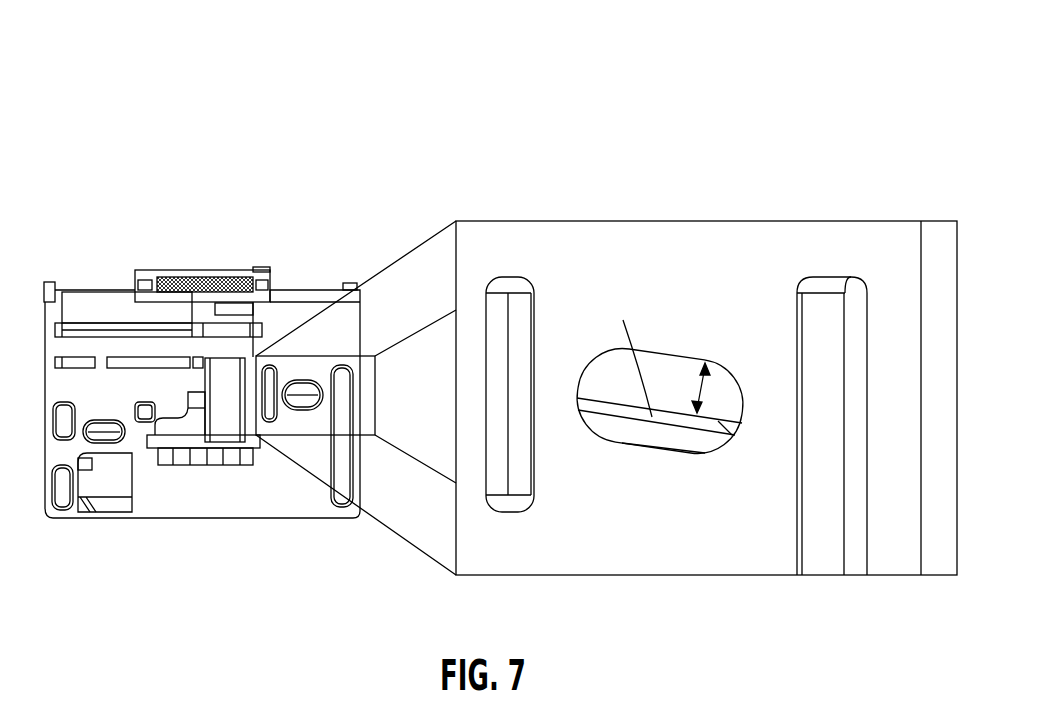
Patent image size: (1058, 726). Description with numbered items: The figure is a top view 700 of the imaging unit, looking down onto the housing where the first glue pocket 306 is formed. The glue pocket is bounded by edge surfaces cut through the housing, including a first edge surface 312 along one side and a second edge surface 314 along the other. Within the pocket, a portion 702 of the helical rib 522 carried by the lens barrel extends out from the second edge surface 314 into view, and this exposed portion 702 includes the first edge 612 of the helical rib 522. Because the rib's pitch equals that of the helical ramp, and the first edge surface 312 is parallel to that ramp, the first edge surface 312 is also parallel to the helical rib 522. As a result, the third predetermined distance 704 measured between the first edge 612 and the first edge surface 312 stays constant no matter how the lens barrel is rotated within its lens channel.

The top view 700 is at (306, 110).
The first glue pocket 306 is at (667, 353).
The first edge surface 312 is at (687, 355).
The second edge surface 314 is at (678, 458).
The helical rib 522 is at (707, 443).
The first edge 612 is at (631, 354).
The portion of the helical rib 702 is at (647, 435).
The third predetermined distance 704 is at (705, 388).